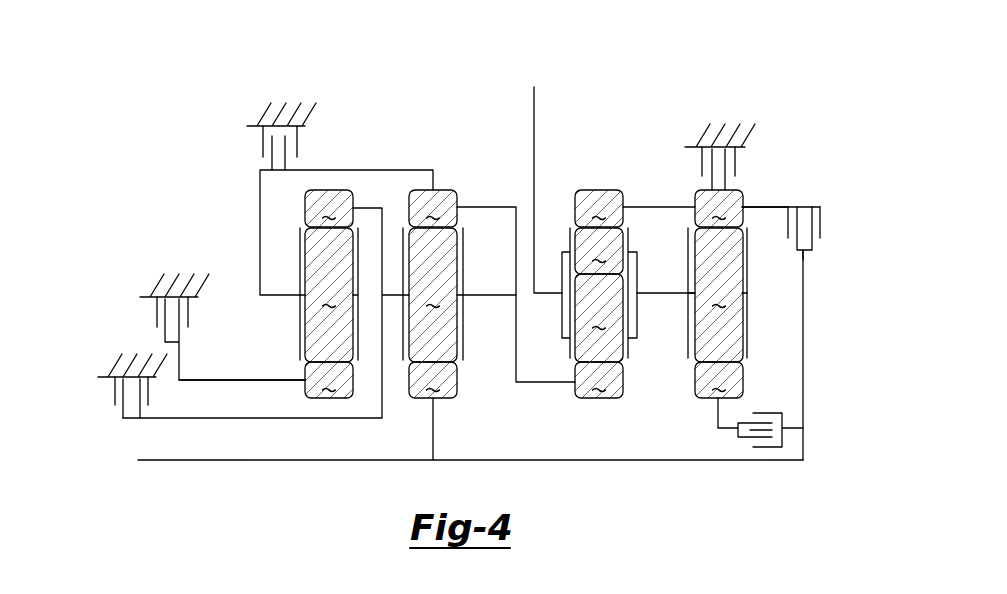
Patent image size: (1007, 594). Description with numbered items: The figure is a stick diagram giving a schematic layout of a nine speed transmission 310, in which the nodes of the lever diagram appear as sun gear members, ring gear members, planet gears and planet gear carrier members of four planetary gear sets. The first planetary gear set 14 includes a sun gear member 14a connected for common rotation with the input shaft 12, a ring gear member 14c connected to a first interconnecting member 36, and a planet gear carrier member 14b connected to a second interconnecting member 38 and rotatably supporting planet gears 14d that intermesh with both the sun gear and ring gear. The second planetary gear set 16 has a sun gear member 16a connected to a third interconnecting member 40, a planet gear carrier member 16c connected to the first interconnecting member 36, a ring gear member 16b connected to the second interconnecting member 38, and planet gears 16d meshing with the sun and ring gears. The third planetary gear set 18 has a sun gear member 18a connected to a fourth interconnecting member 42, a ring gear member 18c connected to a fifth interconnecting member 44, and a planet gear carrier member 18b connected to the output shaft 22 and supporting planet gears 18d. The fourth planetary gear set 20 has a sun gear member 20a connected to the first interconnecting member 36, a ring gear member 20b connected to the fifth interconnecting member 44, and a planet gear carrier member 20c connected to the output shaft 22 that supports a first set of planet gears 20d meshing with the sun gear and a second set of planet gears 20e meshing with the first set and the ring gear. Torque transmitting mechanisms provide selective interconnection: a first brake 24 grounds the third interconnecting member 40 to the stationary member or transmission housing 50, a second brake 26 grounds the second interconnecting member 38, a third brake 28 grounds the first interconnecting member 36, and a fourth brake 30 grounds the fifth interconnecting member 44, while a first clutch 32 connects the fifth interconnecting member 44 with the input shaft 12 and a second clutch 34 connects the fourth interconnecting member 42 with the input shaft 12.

The nine speed transmission 310 is at (670, 36).
The input member or shaft 12 is at (497, 380).
The first planetary gear set 14 is at (452, 285).
The sun gear member 14a is at (433, 411).
The planet gear carrier member 14b is at (452, 341).
The ring gear member 14c is at (433, 208).
The planet gears 14d is at (433, 295).
The second planetary gear set 16 is at (346, 246).
The sun gear member 16a is at (329, 380).
The ring gear member 16b is at (311, 287).
The planet gear carrier member 16c is at (329, 208).
The planet gears 16d is at (329, 295).
The third planetary gear set 18 is at (694, 343).
The sun gear member 18a is at (719, 380).
The planet gear carrier member 18b is at (694, 303).
The ring gear member 18c is at (719, 208).
The planet gears 18d is at (719, 295).
The fourth planetary gear set 20 is at (582, 257).
The sun gear member 20a is at (599, 380).
The ring gear member 20b is at (599, 208).
The planet gear carrier member 20c is at (582, 293).
The first set of planet gears 20d is at (599, 318).
The second set of planet gears 20e is at (599, 251).
The output shaft or member 22 is at (614, 190).
The first brake 24 is at (231, 338).
The second brake 26 is at (105, 397).
The third brake 28 is at (243, 148).
The fourth brake 30 is at (750, 158).
The first clutch 32 is at (828, 233).
The second clutch 34 is at (770, 404).
The first shaft or interconnecting member 36 is at (484, 277).
The second shaft or interconnecting member 38 is at (263, 295).
The third shaft or interconnecting member 40 is at (242, 353).
The fourth shaft or interconnecting member 42 is at (701, 414).
The fifth shaft or interconnecting member 44 is at (721, 181).
The stationary member or transmission housing 50 is at (415, 226).